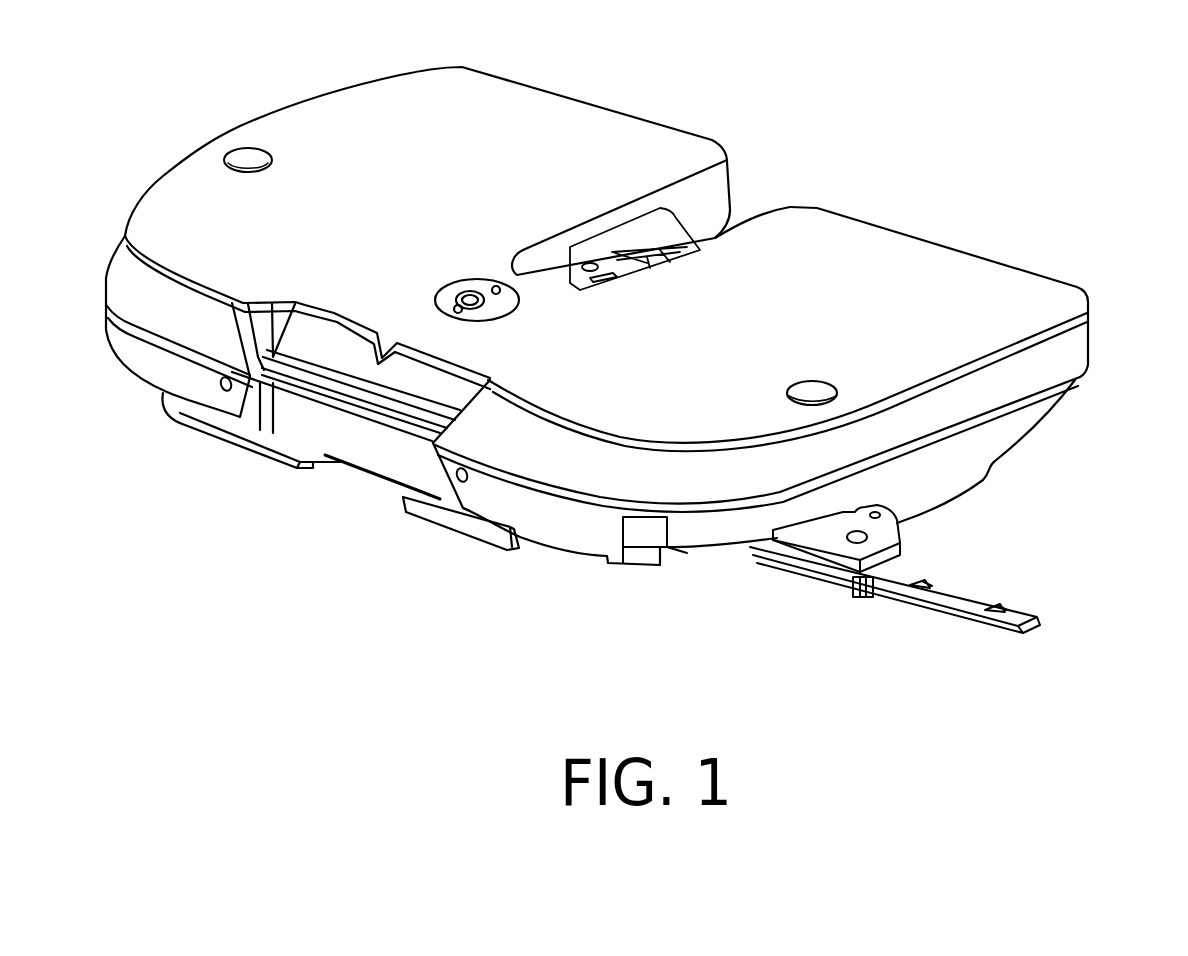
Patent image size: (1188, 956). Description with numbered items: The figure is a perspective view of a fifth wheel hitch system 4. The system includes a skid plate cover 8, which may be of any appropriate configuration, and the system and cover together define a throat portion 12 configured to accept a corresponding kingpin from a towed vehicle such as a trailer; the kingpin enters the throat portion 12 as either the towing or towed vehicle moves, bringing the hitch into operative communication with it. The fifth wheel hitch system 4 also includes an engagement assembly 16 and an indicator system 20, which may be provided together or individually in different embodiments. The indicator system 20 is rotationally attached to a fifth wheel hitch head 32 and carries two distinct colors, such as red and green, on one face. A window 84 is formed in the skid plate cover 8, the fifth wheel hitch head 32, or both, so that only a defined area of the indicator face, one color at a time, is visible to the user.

The fifth wheel hitch system 4 is at (913, 193).
The skid plate cover 8 is at (990, 253).
The throat portion 12 is at (723, 183).
The engagement assembly 16 is at (760, 207).
The indicator system 20 is at (642, 587).
The fifth wheel hitch head 32 is at (1023, 408).
The window 84 is at (693, 560).